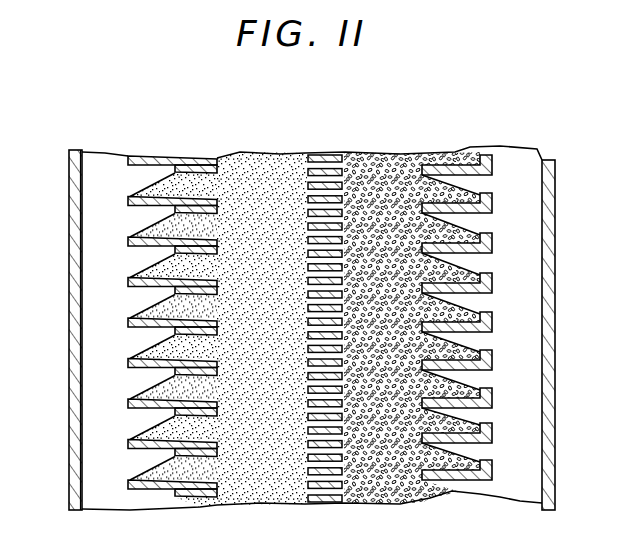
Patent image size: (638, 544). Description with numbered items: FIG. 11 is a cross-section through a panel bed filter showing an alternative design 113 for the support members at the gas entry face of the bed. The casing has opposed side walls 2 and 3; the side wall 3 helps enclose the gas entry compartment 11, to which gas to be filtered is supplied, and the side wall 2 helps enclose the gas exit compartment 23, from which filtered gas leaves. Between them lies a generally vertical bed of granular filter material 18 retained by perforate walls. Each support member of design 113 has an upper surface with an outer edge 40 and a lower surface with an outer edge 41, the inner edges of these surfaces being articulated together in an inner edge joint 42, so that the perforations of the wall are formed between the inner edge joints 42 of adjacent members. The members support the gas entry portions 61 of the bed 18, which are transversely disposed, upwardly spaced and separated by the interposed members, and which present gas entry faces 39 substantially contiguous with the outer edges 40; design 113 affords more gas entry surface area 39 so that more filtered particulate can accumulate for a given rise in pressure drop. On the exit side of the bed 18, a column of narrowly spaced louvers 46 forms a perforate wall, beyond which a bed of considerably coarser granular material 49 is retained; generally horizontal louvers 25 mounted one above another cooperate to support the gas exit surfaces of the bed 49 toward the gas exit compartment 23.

The side wall 2 is at (553, 190).
The side wall 3 is at (67, 290).
The gas entry compartment 11 is at (155, 326).
The bed of granular filter material 18 is at (200, 329).
The gas exit compartment 23 is at (477, 317).
The louvers 25 is at (492, 250).
The gas entry faces 39 is at (150, 392).
The outer edge of upper surface 40 is at (130, 238).
The outer edge of lower surface 41 is at (182, 252).
The inner edge joint 42 is at (262, 328).
The louvers 46 is at (335, 440).
The granular material bed 49 is at (390, 310).
The gas entry portions 61 is at (150, 415).
The support member design 113 is at (148, 332).